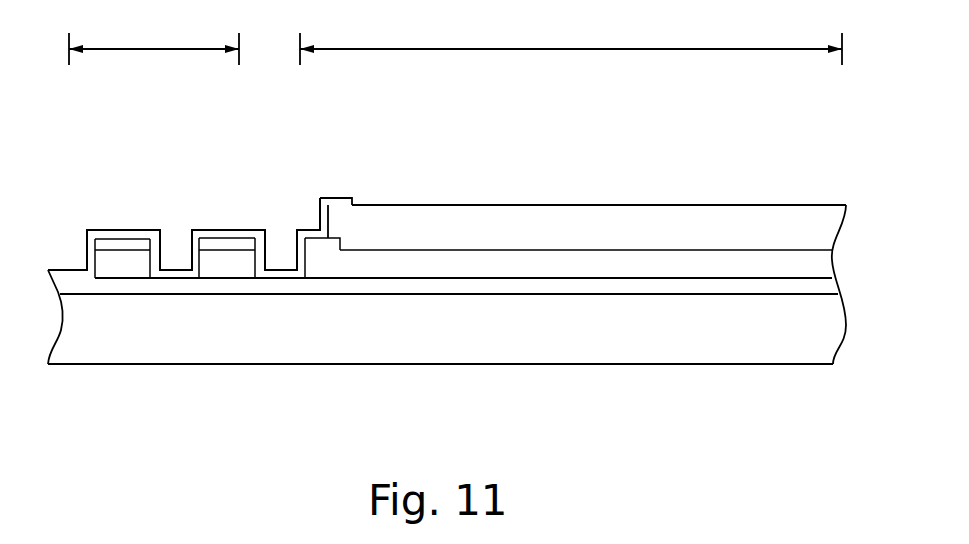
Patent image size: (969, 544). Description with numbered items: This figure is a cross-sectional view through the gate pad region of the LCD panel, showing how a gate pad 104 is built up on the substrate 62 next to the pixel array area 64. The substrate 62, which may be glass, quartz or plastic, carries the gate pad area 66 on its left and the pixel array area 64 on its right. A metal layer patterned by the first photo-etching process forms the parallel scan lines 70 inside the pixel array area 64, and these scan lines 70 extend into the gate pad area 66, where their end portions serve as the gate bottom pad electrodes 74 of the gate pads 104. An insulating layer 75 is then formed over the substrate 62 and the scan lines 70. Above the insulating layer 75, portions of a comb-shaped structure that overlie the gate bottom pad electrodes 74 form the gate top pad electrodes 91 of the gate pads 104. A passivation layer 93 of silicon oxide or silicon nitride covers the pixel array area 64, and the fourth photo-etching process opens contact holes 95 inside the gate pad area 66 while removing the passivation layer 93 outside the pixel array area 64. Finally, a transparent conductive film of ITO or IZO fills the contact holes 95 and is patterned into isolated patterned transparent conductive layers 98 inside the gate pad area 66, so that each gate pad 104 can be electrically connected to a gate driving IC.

The substrate 62 is at (462, 342).
The pixel array area 64 is at (571, 42).
The gate pad area 66 is at (154, 42).
The scan lines 70 is at (822, 286).
The gate bottom pad electrodes 74 is at (228, 288).
The insulating layer 75 is at (130, 263).
The gate top pad electrodes 91 is at (100, 240).
The passivation layer 93 is at (826, 226).
The contact holes 95 is at (281, 238).
The patterned transparent conductive layers 98 is at (333, 202).
The gate pads 104 is at (122, 160).